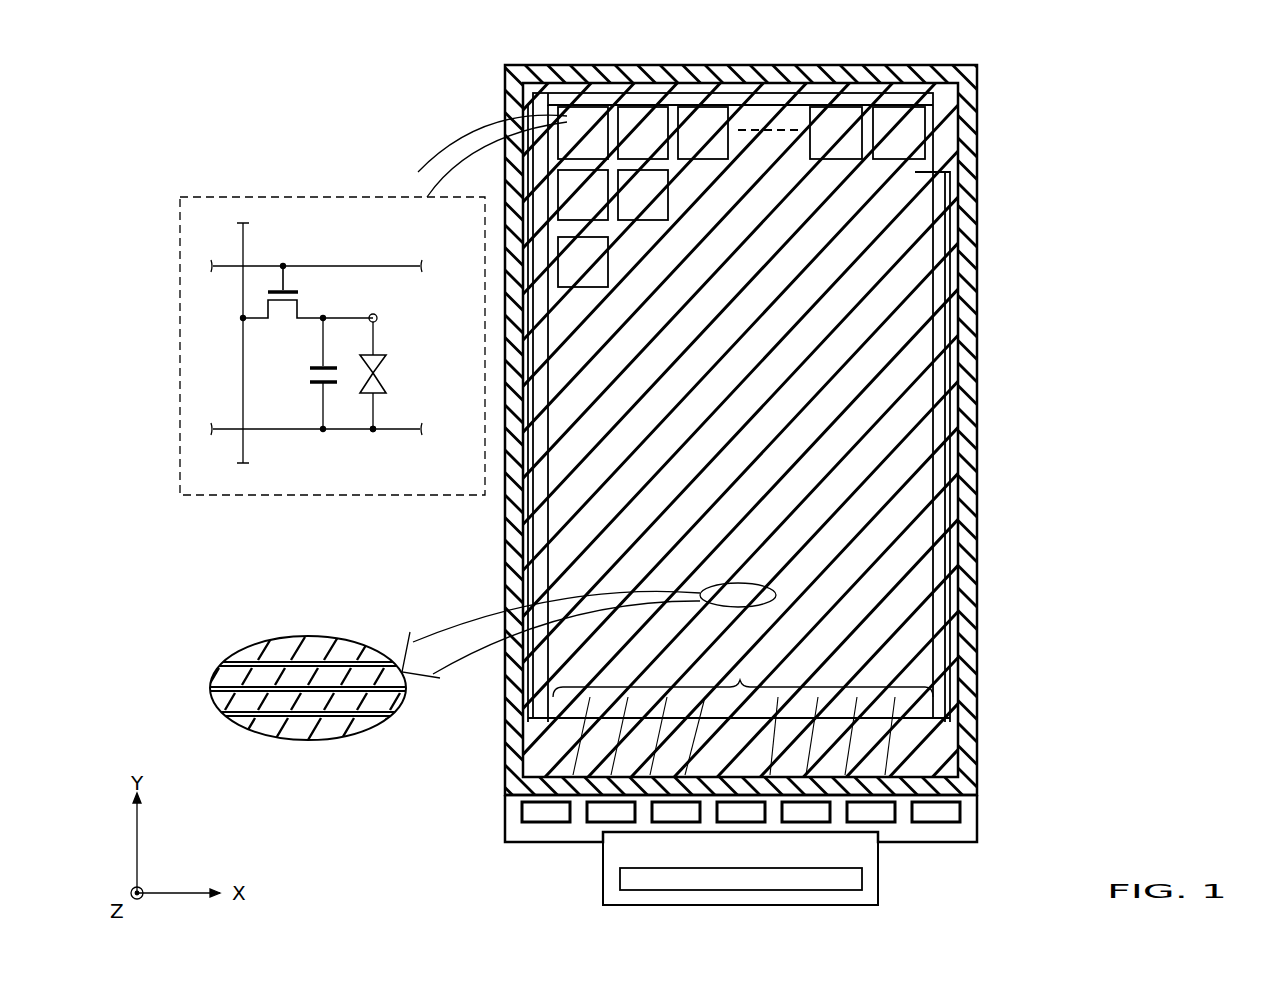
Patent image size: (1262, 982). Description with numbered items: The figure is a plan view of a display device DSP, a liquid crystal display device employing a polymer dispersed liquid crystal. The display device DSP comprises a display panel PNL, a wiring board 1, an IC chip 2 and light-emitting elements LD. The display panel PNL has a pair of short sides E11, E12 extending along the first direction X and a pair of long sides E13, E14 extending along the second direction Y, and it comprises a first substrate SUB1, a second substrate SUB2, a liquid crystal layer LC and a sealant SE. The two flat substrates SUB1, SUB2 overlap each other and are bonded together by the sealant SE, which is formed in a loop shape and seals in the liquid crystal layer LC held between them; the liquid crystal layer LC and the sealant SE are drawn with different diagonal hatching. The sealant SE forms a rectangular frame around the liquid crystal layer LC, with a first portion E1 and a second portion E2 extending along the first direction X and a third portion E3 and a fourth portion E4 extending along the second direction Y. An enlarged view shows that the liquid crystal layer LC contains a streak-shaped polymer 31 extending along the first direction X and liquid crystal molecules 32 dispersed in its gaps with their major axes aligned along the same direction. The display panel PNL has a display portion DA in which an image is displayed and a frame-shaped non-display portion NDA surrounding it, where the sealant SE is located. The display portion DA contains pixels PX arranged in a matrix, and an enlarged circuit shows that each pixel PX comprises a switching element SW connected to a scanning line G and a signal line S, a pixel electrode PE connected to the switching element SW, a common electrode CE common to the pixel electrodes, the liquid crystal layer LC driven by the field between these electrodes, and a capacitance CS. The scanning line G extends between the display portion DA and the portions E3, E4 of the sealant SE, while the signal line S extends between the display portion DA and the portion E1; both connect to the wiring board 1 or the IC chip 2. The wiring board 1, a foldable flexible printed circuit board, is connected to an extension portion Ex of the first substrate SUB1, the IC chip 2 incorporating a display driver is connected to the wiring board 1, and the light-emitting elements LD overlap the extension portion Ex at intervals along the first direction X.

The display panel PNL is at (977, 63).
The display device DSP is at (1060, 117).
The pixel PX is at (690, 107).
The short side E12 is at (768, 65).
The second portion E2 is at (853, 75).
The third portion E3 is at (523, 583).
The fourth portion E4 is at (968, 437).
The long side E13 is at (523, 532).
The long side E14 is at (978, 408).
The first portion E1 is at (605, 800).
The short side E11 is at (520, 845).
The extension portion Ex is at (515, 830).
The scanning line G is at (213, 262).
The signal line S is at (243, 355).
The switching element SW is at (307, 305).
The pixel electrode PE is at (378, 318).
The common electrode CE is at (395, 430).
The capacitance CS is at (307, 373).
The liquid crystal layer LC is at (388, 373).
The display portion DA is at (937, 508).
The non-display portion NDA is at (967, 560).
The sealant SE is at (975, 640).
The first substrate SUB1 is at (977, 820).
The second substrate SUB2 is at (977, 777).
The light-emitting element LD is at (543, 810).
The wiring board 1 is at (878, 890).
The IC chip 2 is at (800, 870).
The polymer 31 is at (212, 702).
The liquid crystal molecules 32 is at (297, 710).